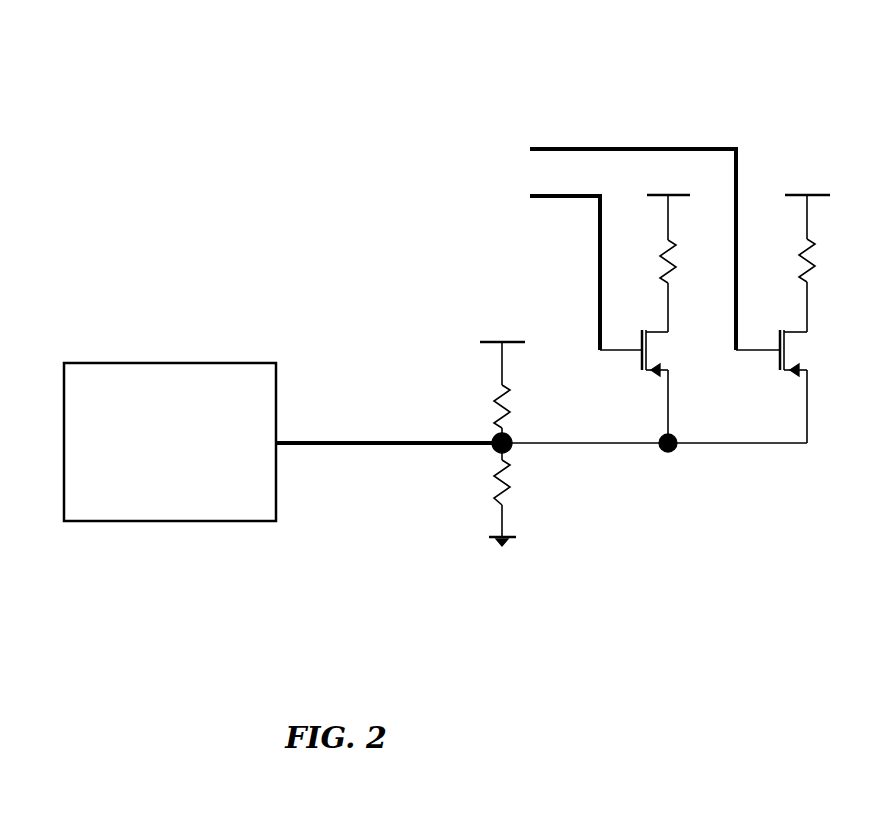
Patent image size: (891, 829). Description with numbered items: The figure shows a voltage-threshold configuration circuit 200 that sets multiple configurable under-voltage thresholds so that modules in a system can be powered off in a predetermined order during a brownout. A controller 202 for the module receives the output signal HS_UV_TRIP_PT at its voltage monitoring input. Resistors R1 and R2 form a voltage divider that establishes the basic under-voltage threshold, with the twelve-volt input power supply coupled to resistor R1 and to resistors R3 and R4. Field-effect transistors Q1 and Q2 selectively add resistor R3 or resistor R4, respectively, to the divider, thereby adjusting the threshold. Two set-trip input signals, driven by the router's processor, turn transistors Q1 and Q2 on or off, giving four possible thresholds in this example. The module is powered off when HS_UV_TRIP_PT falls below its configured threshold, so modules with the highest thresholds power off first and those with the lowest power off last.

The voltage-threshold configuration circuit 200 is at (380, 35).
The voltage controller 202 is at (156, 466).
The resistor R1 is at (509, 380).
The resistor R2 is at (521, 494).
The resistor R3 is at (675, 251).
The resistor R4 is at (817, 251).
The field-effect transistor Q1 is at (636, 348).
The field-effect transistor Q2 is at (775, 348).